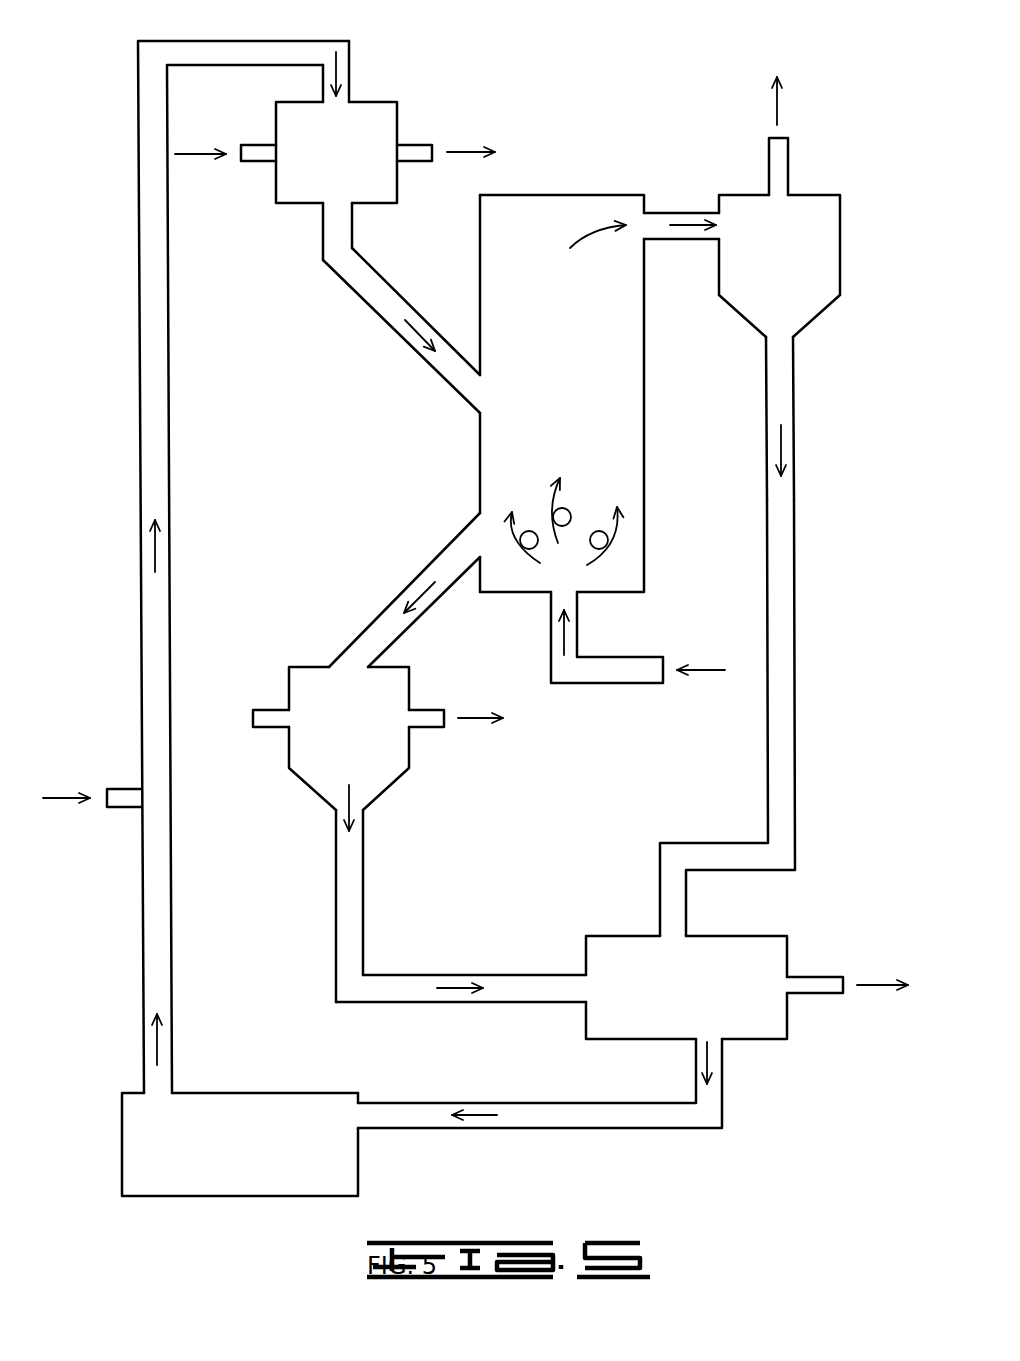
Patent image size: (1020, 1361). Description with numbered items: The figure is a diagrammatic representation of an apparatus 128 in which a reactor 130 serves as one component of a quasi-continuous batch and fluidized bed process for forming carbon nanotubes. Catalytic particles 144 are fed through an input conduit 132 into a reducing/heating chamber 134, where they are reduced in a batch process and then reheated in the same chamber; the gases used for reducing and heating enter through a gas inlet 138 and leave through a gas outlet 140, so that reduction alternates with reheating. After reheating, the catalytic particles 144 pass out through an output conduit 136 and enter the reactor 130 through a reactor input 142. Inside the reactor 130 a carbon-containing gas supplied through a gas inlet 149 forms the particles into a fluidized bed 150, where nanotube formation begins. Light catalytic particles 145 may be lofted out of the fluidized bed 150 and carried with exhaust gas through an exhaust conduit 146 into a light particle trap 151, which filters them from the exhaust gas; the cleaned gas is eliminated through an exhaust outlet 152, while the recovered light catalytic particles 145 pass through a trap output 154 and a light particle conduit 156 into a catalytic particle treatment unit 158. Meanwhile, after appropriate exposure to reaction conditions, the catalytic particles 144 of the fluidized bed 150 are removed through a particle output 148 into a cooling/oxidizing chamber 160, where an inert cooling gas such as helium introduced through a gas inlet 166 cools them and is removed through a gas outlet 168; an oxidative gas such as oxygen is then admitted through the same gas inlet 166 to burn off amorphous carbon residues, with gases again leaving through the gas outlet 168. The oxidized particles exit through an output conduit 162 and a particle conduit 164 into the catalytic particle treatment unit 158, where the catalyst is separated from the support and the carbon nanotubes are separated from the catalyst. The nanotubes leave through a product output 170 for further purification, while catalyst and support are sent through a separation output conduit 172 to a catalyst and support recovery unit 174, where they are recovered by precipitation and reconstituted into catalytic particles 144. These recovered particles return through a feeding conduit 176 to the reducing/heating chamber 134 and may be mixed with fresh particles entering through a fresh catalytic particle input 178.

The apparatus 128 is at (596, 98).
The reactor 130 is at (548, 193).
The input conduit 132 is at (323, 80).
The reducing/heating chamber 134 is at (377, 102).
The output conduit 136 is at (323, 233).
The gas inlet 138 is at (263, 162).
The gas outlet 140 is at (418, 145).
The reactor input 142 is at (397, 330).
The catalytic particles 144 is at (525, 457).
The light catalytic particles 145 is at (517, 263).
The exhaust conduit 146 is at (680, 212).
The particle output 148 is at (408, 587).
The gas inlet 149 is at (612, 657).
The fluidized bed 150 is at (580, 395).
The light particle trap 151 is at (842, 260).
The exhaust outlet 152 is at (790, 153).
The trap output 154 is at (797, 388).
The light particle conduit 156 is at (797, 575).
The catalytic particle treatment unit 158 is at (740, 936).
The cooling/oxidizing chamber 160 is at (312, 667).
The output conduit 162 is at (365, 898).
The particle conduit 164 is at (455, 975).
The gas inlet 166 is at (270, 710).
The gas outlet 168 is at (425, 728).
The product output 170 is at (818, 993).
The separation output conduit 172 is at (722, 1075).
The catalyst and support recovery unit 174 is at (280, 1092).
The feeding conduit 176 is at (140, 448).
The fresh catalytic particle input 178 is at (127, 789).